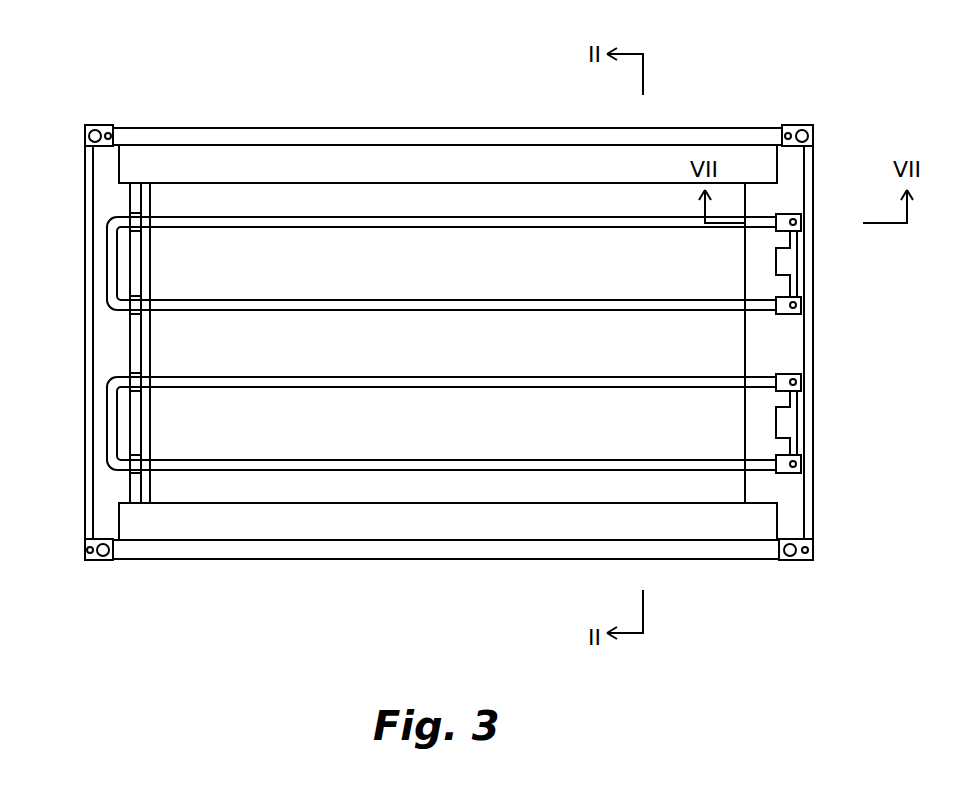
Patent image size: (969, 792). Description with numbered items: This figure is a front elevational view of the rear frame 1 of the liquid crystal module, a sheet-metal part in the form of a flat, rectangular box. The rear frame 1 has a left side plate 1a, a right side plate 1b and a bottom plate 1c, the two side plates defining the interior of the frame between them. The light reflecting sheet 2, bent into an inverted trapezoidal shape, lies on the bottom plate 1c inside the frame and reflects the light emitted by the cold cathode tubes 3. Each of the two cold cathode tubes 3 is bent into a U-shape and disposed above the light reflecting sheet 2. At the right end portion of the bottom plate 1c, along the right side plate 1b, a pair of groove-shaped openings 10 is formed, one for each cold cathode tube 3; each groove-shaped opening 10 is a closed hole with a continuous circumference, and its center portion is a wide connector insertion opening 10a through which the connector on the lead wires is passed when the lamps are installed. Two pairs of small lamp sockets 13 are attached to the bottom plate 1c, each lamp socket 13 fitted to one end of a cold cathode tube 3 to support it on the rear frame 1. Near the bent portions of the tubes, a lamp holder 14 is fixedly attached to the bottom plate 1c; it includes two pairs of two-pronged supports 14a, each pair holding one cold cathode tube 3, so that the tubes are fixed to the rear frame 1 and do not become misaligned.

The rear frame 1 is at (340, 118).
The left side plate 1a is at (88, 413).
The right side plate 1b is at (808, 170).
The bottom plate 1c is at (110, 482).
The light reflecting sheet 2 is at (748, 483).
The cold cathode tube 3 is at (452, 299).
The groove-shaped opening 10 is at (793, 262).
The wide connector insertion opening 10a is at (776, 262).
The lamp socket 13 is at (800, 222).
The lamp holder 14 is at (133, 345).
The two-pronged support 14a is at (135, 212).